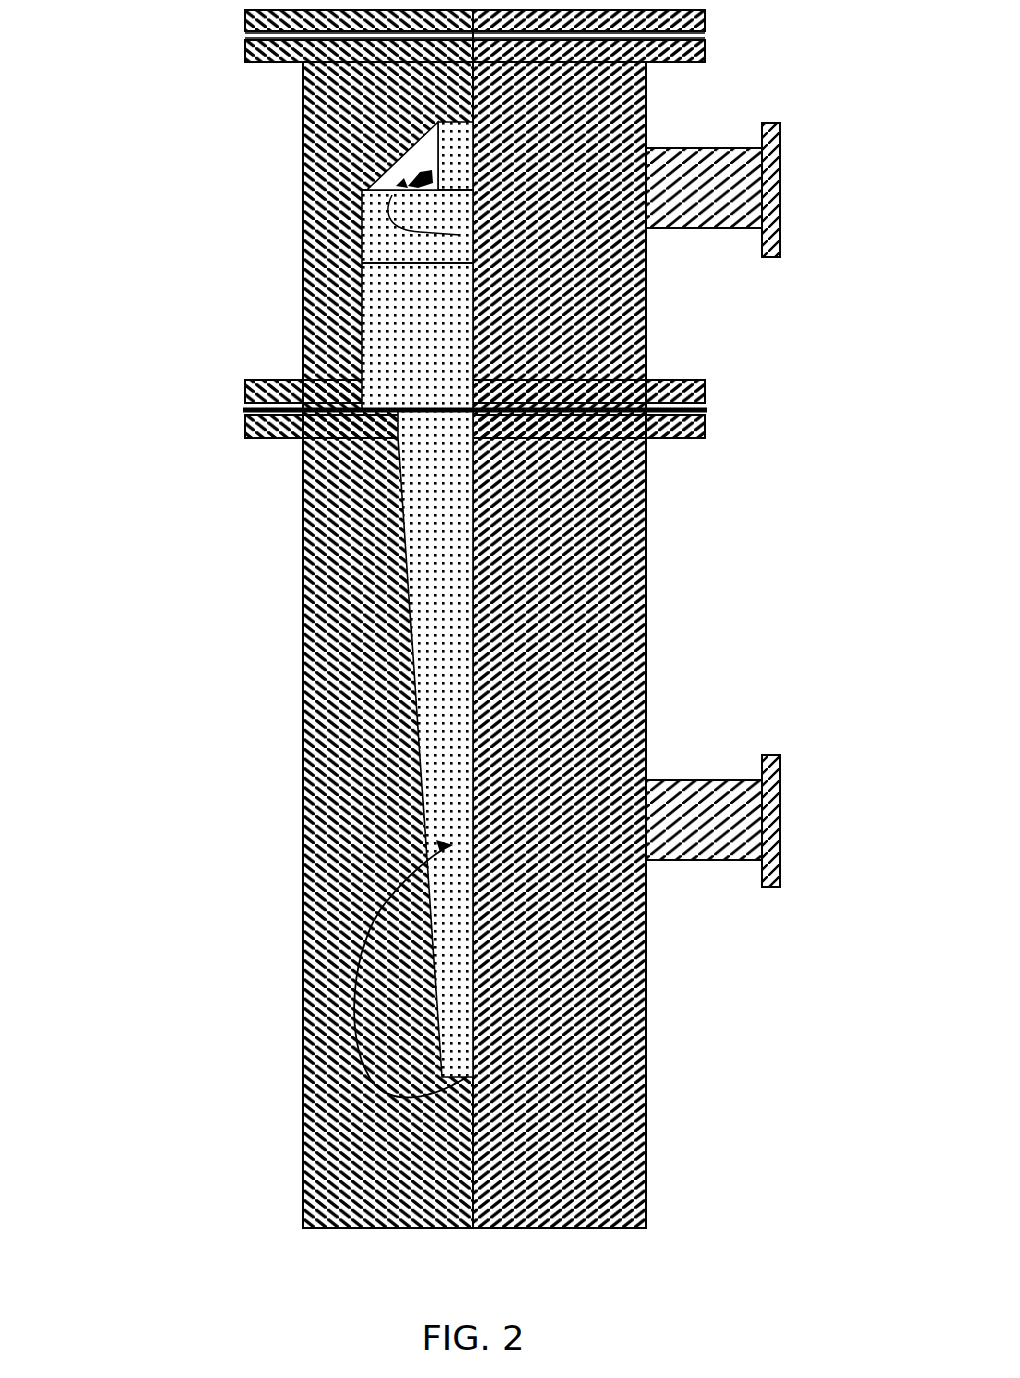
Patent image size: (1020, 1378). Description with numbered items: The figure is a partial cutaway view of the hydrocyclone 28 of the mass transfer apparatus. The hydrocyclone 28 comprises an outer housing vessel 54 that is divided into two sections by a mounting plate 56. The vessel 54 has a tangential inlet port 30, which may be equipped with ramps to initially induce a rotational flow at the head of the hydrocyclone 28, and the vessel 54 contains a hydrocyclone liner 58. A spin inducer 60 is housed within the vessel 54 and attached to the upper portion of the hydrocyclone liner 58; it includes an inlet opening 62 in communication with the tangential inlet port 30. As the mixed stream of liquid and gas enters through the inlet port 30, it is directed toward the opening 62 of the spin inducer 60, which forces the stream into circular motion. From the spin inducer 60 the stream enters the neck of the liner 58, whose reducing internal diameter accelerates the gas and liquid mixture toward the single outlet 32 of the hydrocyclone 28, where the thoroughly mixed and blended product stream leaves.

The hydrocyclone 28 is at (475, 619).
The tangential inlet port 30 is at (767, 256).
The outlet 32 is at (778, 887).
The outer housing vessel 54 is at (303, 653).
The mounting plate 56 is at (705, 417).
The hydrocyclone liner 58 is at (443, 752).
The spin inducer 60 is at (395, 228).
The inlet opening 62 is at (372, 150).